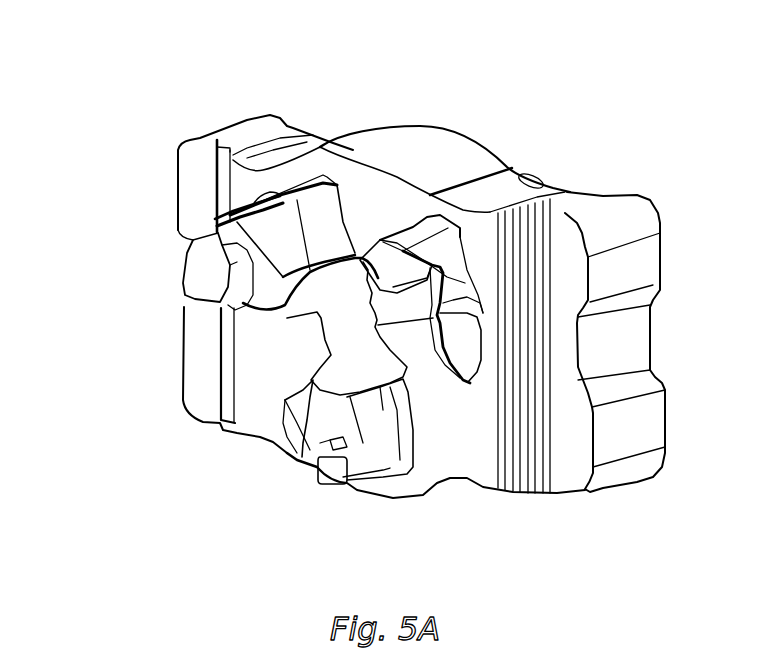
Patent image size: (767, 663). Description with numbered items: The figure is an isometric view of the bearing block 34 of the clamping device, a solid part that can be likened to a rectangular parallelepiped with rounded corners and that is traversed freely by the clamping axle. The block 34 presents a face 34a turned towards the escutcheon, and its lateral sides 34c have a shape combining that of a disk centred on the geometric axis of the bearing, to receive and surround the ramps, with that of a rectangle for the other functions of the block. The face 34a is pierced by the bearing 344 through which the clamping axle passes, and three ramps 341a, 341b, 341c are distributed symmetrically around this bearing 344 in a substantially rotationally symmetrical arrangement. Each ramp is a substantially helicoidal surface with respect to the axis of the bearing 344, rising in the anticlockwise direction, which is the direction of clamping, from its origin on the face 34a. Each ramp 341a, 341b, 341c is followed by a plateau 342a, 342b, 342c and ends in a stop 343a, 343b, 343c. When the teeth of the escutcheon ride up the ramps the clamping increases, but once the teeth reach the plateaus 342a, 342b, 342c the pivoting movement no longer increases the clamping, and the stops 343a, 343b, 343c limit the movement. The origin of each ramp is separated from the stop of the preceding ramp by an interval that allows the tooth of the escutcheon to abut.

The bearing block 34 is at (537, 103).
The face 34a is at (176, 310).
The lateral sides 34c is at (637, 268).
The bearing 344 is at (356, 321).
The ramp 341a is at (420, 345).
The ramp 341b is at (280, 220).
The ramp 341c is at (297, 432).
The plateau 342a is at (477, 318).
The plateau 342b is at (213, 223).
The plateau 342c is at (320, 443).
The stop 343a is at (387, 258).
The stop 343b is at (197, 270).
The stop 343c is at (333, 473).